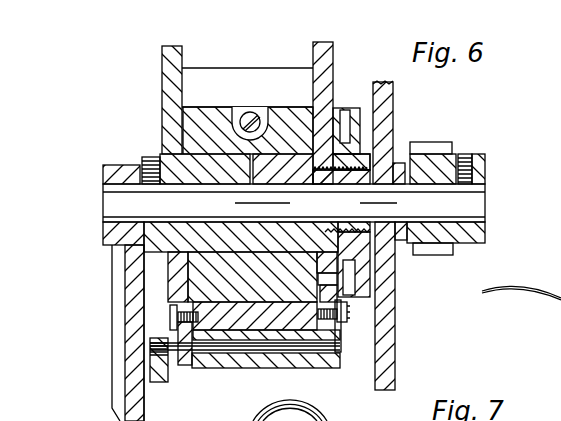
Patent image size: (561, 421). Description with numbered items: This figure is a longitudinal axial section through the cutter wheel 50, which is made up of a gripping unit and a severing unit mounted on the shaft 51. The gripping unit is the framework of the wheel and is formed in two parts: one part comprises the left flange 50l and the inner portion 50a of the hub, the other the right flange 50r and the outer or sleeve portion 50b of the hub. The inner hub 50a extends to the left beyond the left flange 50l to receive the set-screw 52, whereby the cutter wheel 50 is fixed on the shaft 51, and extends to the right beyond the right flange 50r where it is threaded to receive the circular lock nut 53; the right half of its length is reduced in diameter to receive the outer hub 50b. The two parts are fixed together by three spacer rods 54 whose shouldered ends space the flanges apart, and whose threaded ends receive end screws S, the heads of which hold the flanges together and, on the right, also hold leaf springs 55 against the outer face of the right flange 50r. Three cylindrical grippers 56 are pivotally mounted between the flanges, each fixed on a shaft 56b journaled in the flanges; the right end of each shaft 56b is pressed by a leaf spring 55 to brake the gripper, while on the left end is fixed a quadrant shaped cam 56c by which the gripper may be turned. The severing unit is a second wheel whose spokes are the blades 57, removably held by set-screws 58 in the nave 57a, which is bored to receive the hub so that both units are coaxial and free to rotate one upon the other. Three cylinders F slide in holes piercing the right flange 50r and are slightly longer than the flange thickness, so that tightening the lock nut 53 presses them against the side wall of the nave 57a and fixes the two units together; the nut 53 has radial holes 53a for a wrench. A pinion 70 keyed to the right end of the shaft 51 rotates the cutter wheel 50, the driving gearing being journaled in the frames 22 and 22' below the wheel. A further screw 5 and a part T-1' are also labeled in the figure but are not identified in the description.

In FIG. 6, the shaft 51 is at (116, 203).
In FIG. 6, the cutter wheel 50 is at (162, 100).
In FIG. 6, the left flange 50l is at (166, 72).
In FIG. 6, the right flange 50r is at (313, 52).
In FIG. 6, the inner portion of the hub 50a is at (267, 230).
In FIG. 6, the outer or sleeve portion of the hub 50b is at (295, 160).
In FIG. 6, the blades 57 is at (205, 82).
In FIG. 6, the nave 57a is at (207, 278).
In FIG. 6, the set-screws 58 is at (252, 118).
In FIG. 6, the circular lock nut 53 is at (362, 248).
In FIG. 6, the radially extending holes 53a is at (345, 125).
In FIG. 6, the pinion 70 is at (432, 158).
In FIG. 6, the set-screw 52 is at (152, 160).
In FIG. 6, the frame 22 is at (411, 235).
In FIG. 6, the frame 22' is at (101, 321).
In FIG. 6, the spacer rods 54 is at (226, 320).
In FIG. 6, the leaf springs 55 is at (337, 338).
In FIG. 6, the grippers 56 is at (265, 364).
In FIG. 6, the shaft 56b is at (284, 362).
In FIG. 6, the quadrant shaped cam 56c is at (162, 382).
In FIG. 6, the screw 5 is at (343, 314).
In FIG. 6, the end screws S is at (170, 316).
In FIG. 6, the cylinders F is at (322, 278).
In FIG. 7, the tube T-1' is at (521, 315).